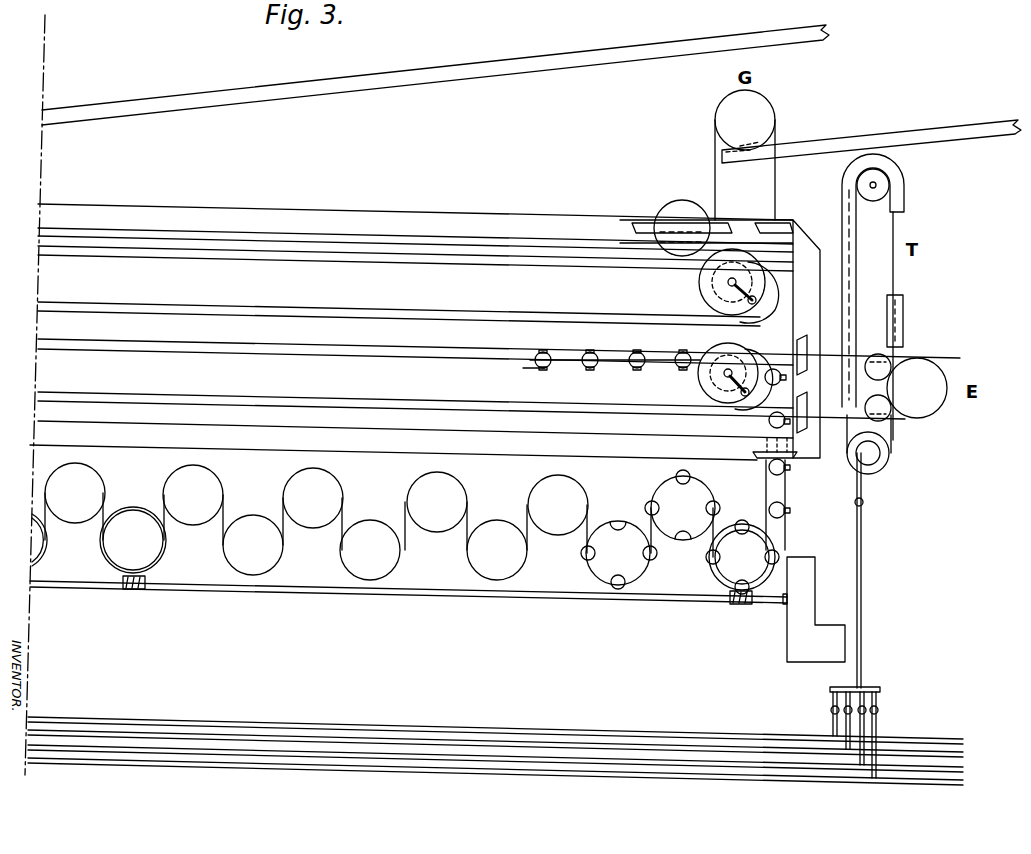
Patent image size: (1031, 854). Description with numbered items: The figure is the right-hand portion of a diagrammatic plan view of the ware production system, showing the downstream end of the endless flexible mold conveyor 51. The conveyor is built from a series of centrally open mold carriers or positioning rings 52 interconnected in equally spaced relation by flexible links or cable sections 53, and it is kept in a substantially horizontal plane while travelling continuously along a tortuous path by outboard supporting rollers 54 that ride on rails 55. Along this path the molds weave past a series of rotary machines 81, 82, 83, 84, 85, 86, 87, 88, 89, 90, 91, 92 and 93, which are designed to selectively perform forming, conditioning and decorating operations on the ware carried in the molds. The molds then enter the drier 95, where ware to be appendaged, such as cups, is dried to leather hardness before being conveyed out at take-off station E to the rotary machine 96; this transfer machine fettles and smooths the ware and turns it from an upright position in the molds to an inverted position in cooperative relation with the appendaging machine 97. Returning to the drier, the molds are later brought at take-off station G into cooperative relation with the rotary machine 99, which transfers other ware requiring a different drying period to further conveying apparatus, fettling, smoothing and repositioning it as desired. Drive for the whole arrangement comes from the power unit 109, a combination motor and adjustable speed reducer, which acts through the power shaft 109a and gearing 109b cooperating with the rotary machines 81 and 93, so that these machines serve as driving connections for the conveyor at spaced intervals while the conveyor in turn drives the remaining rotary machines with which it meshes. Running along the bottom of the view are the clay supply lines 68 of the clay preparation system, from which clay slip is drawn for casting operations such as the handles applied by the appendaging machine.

The endless flexible mold conveyor 51 is at (778, 182).
The mold carriers or positioning rings 52 is at (588, 368).
The flexible links or cable sections 53 is at (640, 368).
The outboard supporting rollers 54 is at (538, 352).
The rails 55 is at (785, 545).
The clay supply lines 68 is at (610, 774).
The rotary machine 81 is at (37, 546).
The rotary machine 82 is at (66, 478).
The rotary machine 83 is at (130, 524).
The rotary machine 84 is at (184, 486).
The rotary machine 85 is at (247, 530).
The rotary machine 86 is at (305, 485).
The rotary machine 87 is at (370, 529).
The rotary machine 88 is at (420, 490).
The rotary machine 89 is at (495, 531).
The rotary machine 90 is at (547, 490).
The rotary machine 91 is at (612, 540).
The rotary machine 92 is at (671, 497).
The rotary machine 93 is at (733, 561).
The drier 95 is at (389, 211).
The rotary machine 96 is at (934, 378).
The appendaging machine 97 is at (884, 449).
The rotary machine 99 is at (764, 118).
The power unit 109 is at (826, 651).
The power shaft 109a is at (569, 598).
The gearing 109b is at (138, 593).